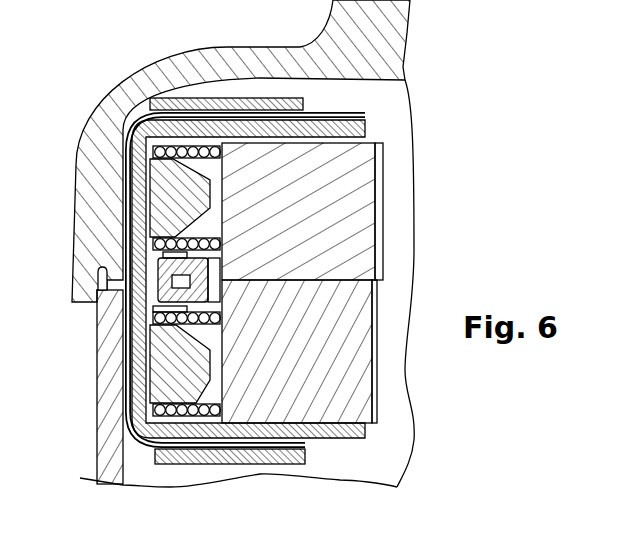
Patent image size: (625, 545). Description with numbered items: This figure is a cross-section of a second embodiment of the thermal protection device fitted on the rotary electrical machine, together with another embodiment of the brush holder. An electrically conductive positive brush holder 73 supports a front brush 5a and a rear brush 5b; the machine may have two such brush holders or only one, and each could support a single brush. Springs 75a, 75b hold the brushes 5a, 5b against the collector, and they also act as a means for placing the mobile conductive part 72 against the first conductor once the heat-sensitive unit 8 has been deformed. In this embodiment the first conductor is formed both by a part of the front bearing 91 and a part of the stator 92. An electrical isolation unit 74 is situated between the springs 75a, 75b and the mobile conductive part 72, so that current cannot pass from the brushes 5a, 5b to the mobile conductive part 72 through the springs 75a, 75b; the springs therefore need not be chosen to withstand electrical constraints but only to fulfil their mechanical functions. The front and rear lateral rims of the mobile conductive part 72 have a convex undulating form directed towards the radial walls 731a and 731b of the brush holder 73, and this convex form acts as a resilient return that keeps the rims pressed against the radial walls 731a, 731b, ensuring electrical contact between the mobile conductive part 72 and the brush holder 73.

The front brush 5a is at (355, 202).
The rear brush 5b is at (348, 371).
The heat-sensitive unit 8 is at (230, 243).
The mobile conductive part 72 is at (228, 151).
The positive brush holder 73 is at (305, 258).
The radial wall 731a is at (347, 126).
The radial wall 731b is at (358, 430).
The electrical isolation unit 74 is at (165, 207).
The spring 75a is at (160, 243).
The spring 75b is at (200, 432).
The front bearing 91 is at (140, 92).
The stator 92 is at (113, 338).